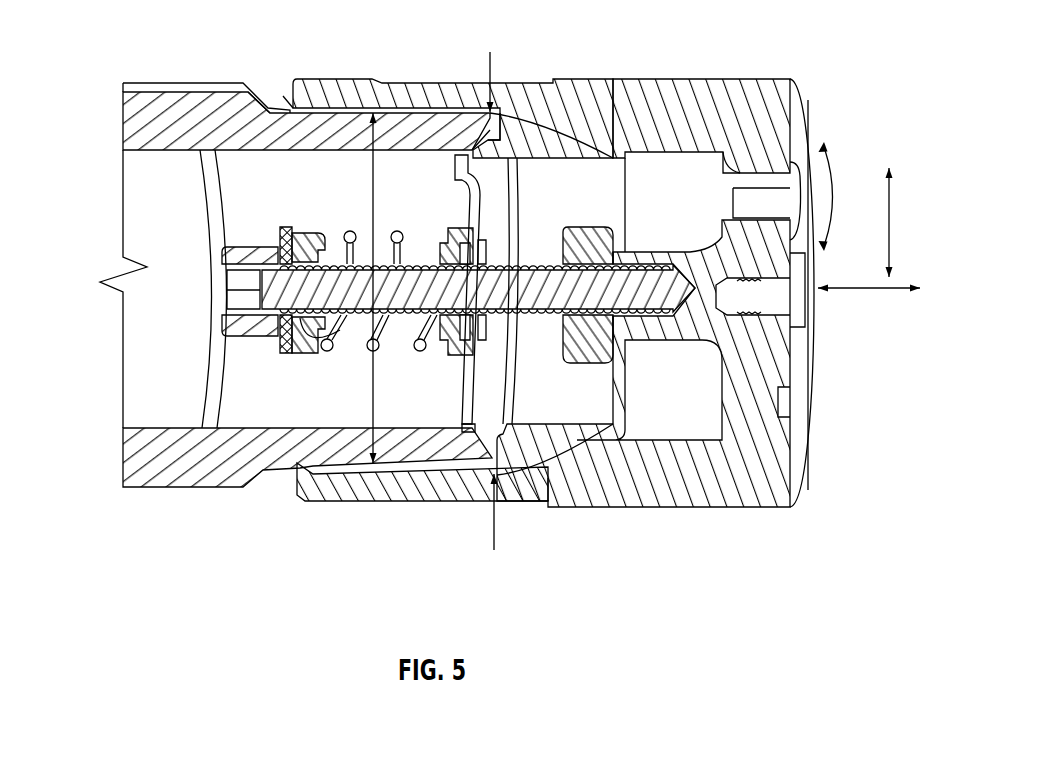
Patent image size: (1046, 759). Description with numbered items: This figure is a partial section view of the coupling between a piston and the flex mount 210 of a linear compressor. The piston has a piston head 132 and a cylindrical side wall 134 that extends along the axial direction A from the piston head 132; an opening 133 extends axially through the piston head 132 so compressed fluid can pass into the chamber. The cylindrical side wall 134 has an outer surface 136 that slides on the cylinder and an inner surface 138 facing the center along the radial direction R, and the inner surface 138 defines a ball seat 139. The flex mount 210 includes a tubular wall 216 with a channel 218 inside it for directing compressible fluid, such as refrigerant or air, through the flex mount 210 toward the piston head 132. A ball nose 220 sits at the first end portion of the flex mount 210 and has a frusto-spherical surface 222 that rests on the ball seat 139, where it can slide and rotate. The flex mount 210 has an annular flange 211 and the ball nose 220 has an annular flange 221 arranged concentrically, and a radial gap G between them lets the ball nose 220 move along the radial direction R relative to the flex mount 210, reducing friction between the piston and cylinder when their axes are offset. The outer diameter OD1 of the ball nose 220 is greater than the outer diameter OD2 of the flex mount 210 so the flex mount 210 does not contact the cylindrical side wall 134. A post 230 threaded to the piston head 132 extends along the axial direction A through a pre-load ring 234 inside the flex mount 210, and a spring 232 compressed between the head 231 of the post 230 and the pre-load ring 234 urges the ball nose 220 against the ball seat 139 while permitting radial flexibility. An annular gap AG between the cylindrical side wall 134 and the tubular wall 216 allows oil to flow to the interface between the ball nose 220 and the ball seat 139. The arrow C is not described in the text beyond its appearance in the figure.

The flex mount 210 is at (163, 95).
The tubular wall 216 is at (177, 473).
The annular gap AG is at (280, 104).
The ball nose 220 is at (520, 125).
The radial gap G is at (480, 137).
The frusto-spherical surface 222 is at (580, 113).
The outer surface 136 is at (656, 512).
The ball seat 139 is at (575, 445).
The annular flange 221 is at (508, 458).
The inner surface 138 is at (662, 428).
The piston head 132 is at (803, 432).
The opening 133 is at (746, 163).
The cylindrical side wall 134 is at (417, 490).
The channel 218 is at (157, 316).
The head 231 is at (255, 338).
The spring 232 is at (348, 230).
The pre-load ring 234 is at (477, 205).
The annular flange 211 is at (497, 423).
The post 230 is at (527, 340).
The outer diameter of flex mount OD2 is at (372, 407).
The outer diameter of ball nose OD1 is at (488, 74).
The circumferential direction C is at (832, 195).
The radial direction R is at (889, 232).
The axial direction A is at (848, 290).